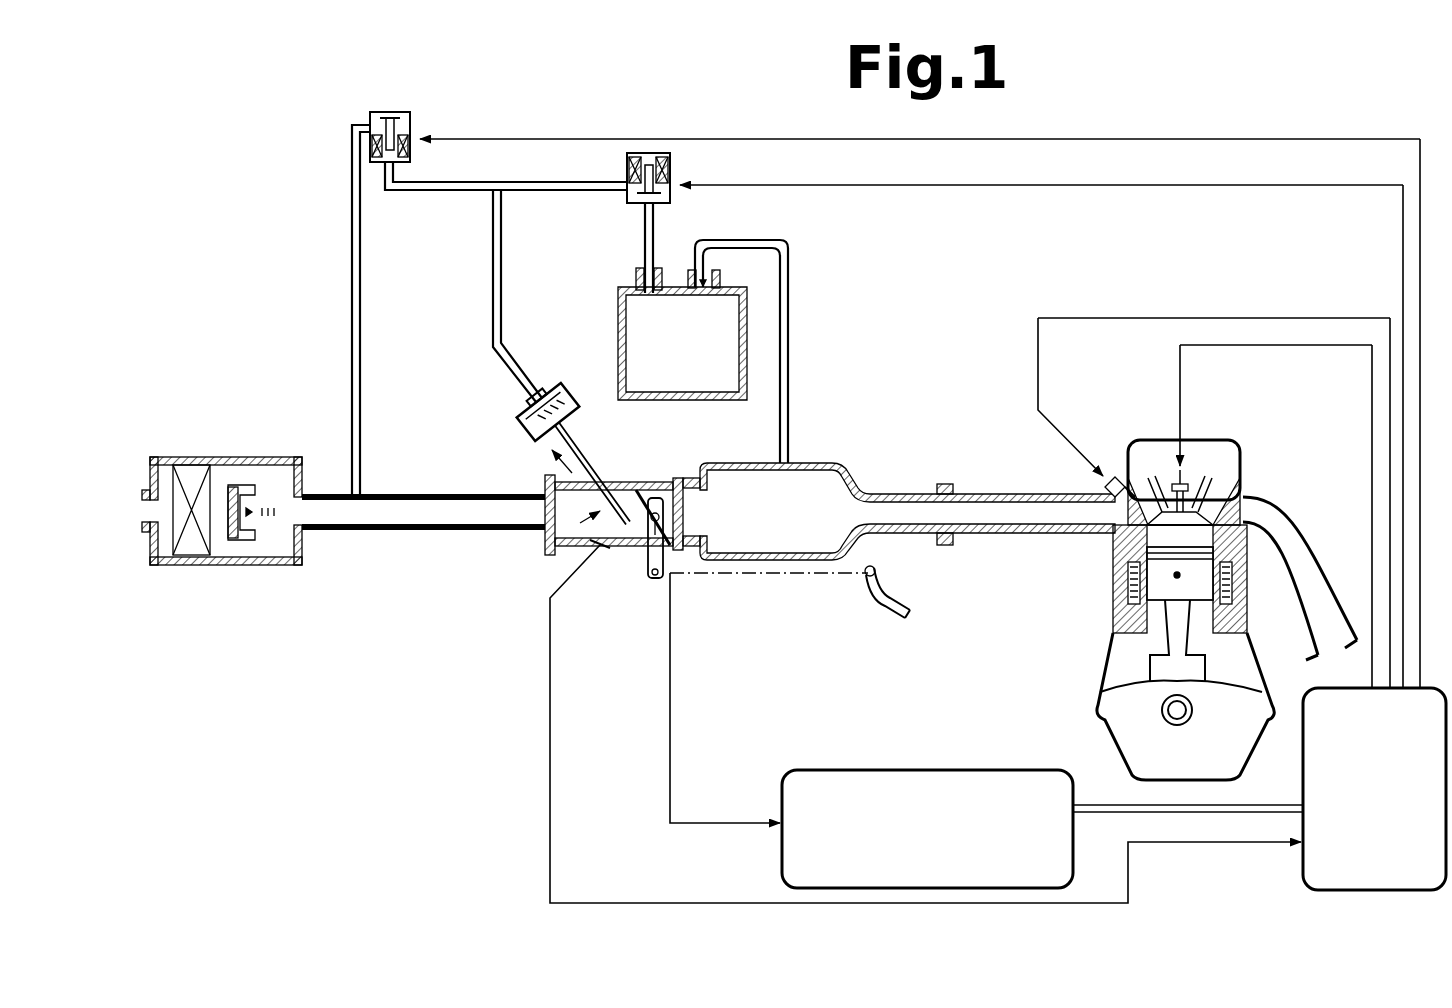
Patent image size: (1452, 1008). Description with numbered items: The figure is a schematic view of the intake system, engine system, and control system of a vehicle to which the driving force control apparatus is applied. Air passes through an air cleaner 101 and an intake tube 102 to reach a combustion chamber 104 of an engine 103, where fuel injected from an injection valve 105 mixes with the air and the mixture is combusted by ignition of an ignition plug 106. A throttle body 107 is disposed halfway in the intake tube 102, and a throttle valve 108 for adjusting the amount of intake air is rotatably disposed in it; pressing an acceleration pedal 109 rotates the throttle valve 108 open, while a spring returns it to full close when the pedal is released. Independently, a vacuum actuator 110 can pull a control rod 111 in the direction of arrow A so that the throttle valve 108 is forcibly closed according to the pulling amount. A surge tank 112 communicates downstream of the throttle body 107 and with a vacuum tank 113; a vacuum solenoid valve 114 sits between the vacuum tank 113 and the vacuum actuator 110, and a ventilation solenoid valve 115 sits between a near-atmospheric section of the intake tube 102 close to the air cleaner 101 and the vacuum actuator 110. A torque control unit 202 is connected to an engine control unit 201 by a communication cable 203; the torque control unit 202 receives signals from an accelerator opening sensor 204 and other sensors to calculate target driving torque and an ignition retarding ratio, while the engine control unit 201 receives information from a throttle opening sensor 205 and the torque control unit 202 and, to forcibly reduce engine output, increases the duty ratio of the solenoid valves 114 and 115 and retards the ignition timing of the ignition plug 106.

The air cleaner 101 is at (248, 457).
The intake tube 102 is at (468, 530).
The engine 103 is at (1083, 702).
The combustion chamber 104 is at (1120, 565).
The injection valve 105 is at (1113, 478).
The ignition plug 106 is at (1197, 488).
The throttle body 107 is at (695, 476).
The throttle valve 108 is at (650, 496).
The acceleration pedal 109 is at (892, 580).
The vacuum actuator 110 is at (497, 418).
The control rod 111 is at (562, 385).
The surge tank 112 is at (840, 476).
The vacuum tank 113 is at (618, 330).
The vacuum solenoid valve 114 is at (690, 202).
The ventilation solenoid valve 115 is at (340, 137).
The engine control unit 201 is at (1303, 860).
The torque control unit 202 is at (782, 790).
The communication cable 203 is at (1263, 806).
The accelerator opening sensor 204 is at (702, 506).
The throttle opening sensor 205 is at (542, 550).